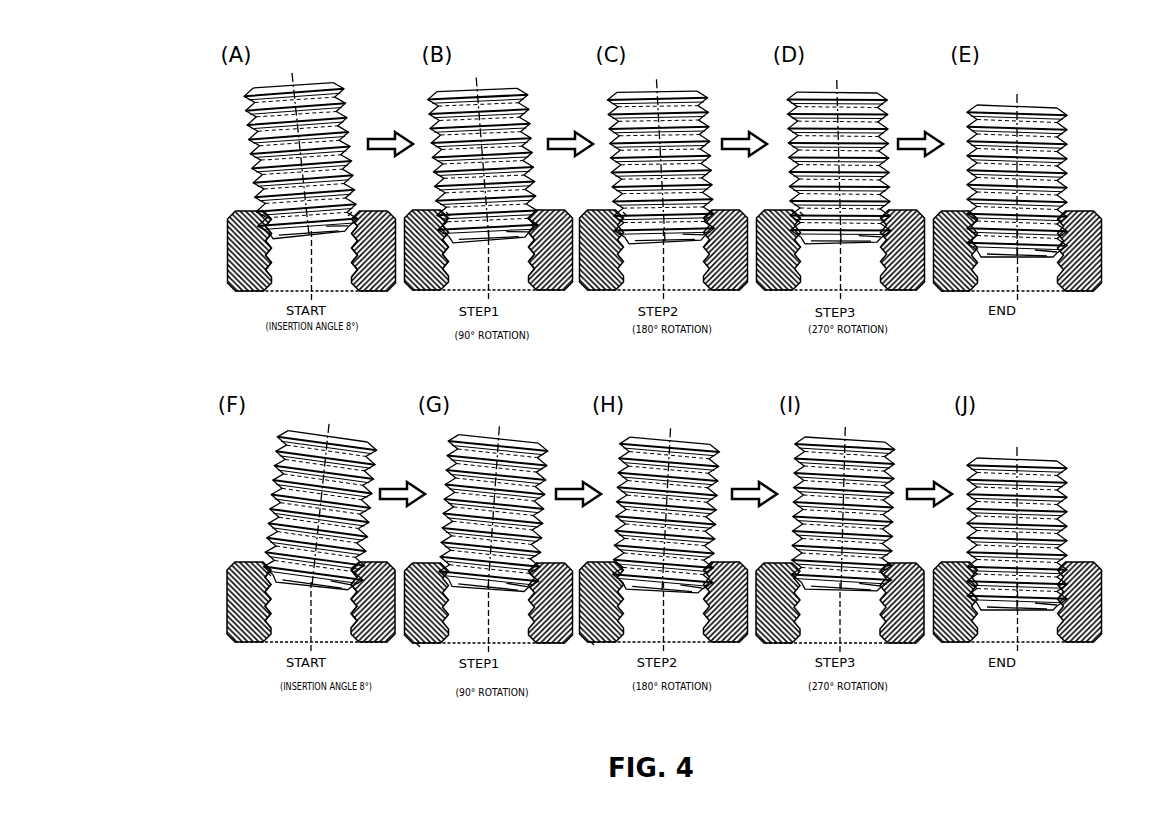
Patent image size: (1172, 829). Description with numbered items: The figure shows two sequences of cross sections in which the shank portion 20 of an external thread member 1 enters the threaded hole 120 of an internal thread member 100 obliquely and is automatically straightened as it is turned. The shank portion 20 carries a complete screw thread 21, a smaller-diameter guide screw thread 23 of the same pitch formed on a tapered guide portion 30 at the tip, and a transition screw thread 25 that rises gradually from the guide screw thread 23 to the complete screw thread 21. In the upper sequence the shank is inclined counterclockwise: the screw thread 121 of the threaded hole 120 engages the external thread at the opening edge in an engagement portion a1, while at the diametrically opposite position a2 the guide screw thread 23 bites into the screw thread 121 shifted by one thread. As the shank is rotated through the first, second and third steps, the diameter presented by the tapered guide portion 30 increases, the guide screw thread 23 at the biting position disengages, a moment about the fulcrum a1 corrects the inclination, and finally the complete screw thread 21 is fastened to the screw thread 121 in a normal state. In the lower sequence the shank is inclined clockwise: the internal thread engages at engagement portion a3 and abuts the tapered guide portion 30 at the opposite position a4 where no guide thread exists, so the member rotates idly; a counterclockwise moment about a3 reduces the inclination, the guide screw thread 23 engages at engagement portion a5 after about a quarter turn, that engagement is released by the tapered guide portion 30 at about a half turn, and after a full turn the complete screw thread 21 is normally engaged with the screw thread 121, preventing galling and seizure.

The external thread member 1 is at (654, 309).
The shank portion 20 is at (655, 317).
The complete screw thread 21 is at (633, 344).
The guide screw thread 23 is at (662, 450).
The transition screw thread 25 is at (663, 453).
The tapered guide portion 30 is at (617, 451).
The internal thread member 100 is at (660, 419).
The threaded hole 120 is at (388, 459).
The screw thread of the threaded hole 121 is at (650, 466).
The engagement portion a1 is at (502, 197).
The opposite position a2 is at (545, 197).
The engagement portion a3 is at (548, 547).
The opposite position a4 is at (239, 541).
The engagement portion a5 is at (491, 682).